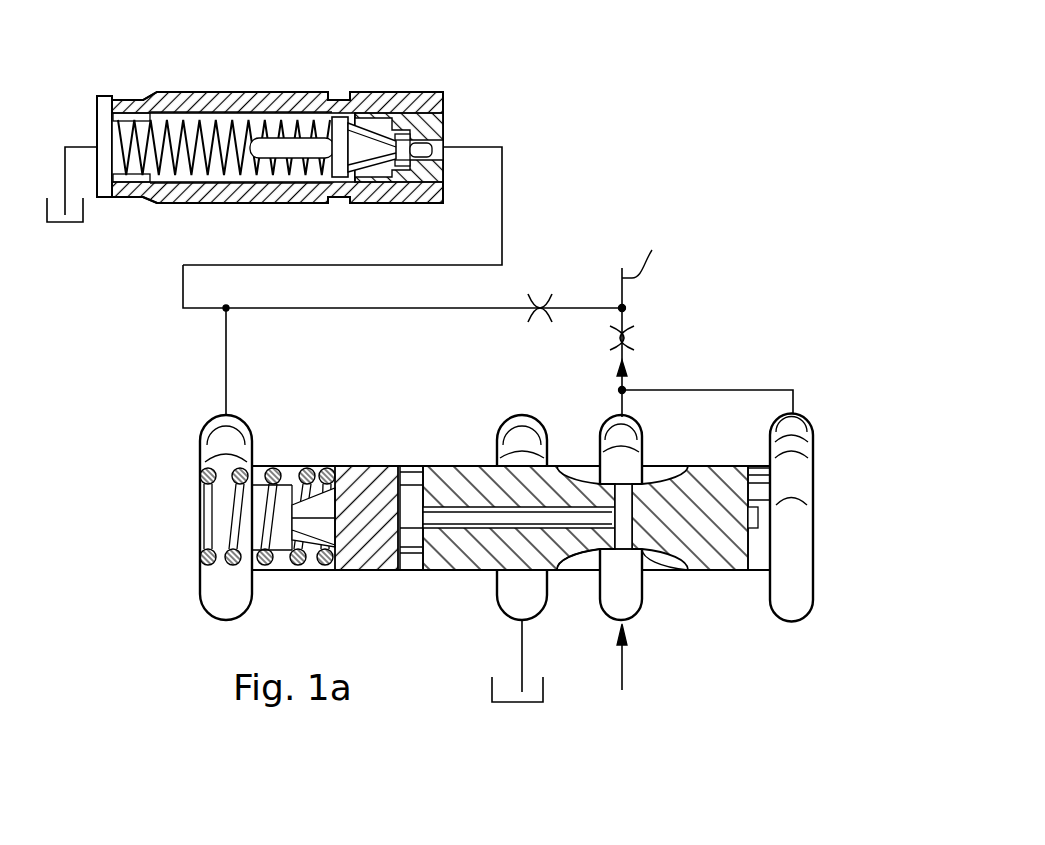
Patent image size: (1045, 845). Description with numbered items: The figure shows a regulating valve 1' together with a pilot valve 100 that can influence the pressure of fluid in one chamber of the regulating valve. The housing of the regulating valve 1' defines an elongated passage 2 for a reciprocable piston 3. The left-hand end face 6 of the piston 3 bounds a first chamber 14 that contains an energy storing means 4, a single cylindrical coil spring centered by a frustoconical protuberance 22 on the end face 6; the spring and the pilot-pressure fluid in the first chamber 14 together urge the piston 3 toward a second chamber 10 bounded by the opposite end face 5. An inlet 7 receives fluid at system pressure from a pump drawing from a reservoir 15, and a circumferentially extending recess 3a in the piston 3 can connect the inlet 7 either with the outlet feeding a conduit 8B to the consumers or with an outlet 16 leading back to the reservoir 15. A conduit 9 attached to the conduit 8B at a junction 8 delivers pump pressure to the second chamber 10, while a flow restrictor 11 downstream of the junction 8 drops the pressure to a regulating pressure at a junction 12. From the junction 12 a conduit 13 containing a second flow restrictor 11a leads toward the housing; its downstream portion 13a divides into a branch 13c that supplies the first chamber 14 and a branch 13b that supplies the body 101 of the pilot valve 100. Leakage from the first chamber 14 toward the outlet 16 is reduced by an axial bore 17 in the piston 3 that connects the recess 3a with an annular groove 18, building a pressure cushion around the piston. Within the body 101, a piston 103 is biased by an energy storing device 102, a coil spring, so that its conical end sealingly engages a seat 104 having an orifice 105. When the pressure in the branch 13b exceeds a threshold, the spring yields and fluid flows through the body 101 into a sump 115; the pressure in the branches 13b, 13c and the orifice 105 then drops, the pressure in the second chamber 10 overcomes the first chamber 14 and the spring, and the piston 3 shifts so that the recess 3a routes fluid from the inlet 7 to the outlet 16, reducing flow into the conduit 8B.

The regulating valve 1' is at (511, 595).
The elongated passage 2 is at (445, 572).
The piston 3 is at (372, 473).
The circumferentially extending recess 3a is at (658, 565).
The energy storing means 4 is at (200, 476).
The end face 5 is at (755, 548).
The end face 6 is at (320, 572).
The inlet 7 is at (622, 602).
The junction 8 is at (630, 388).
The conduit 8B is at (655, 254).
The conduit 9 is at (760, 388).
The second chamber 10 is at (797, 470).
The flow restrictor 11 is at (634, 338).
The second flow restrictor 11a is at (540, 300).
The junction 12 is at (634, 308).
The conduit 13 is at (590, 305).
The conduit portion 13a is at (412, 312).
The branch conduit 13b is at (504, 190).
The branch conduit 13c is at (228, 348).
The first chamber 14 is at (218, 593).
The reservoir 15 is at (505, 690).
The outlet 16 is at (532, 592).
The axial bore 17 is at (475, 515).
The annular groove 18 is at (405, 572).
The frustoconical protuberance 22 is at (332, 468).
The pilot valve 100 is at (464, 88).
The valve body 101 is at (165, 197).
The energy storing device 102 is at (190, 128).
The piston 103 is at (341, 135).
The seat 104 is at (425, 175).
The orifice 105 is at (400, 165).
The sump 115 is at (65, 215).